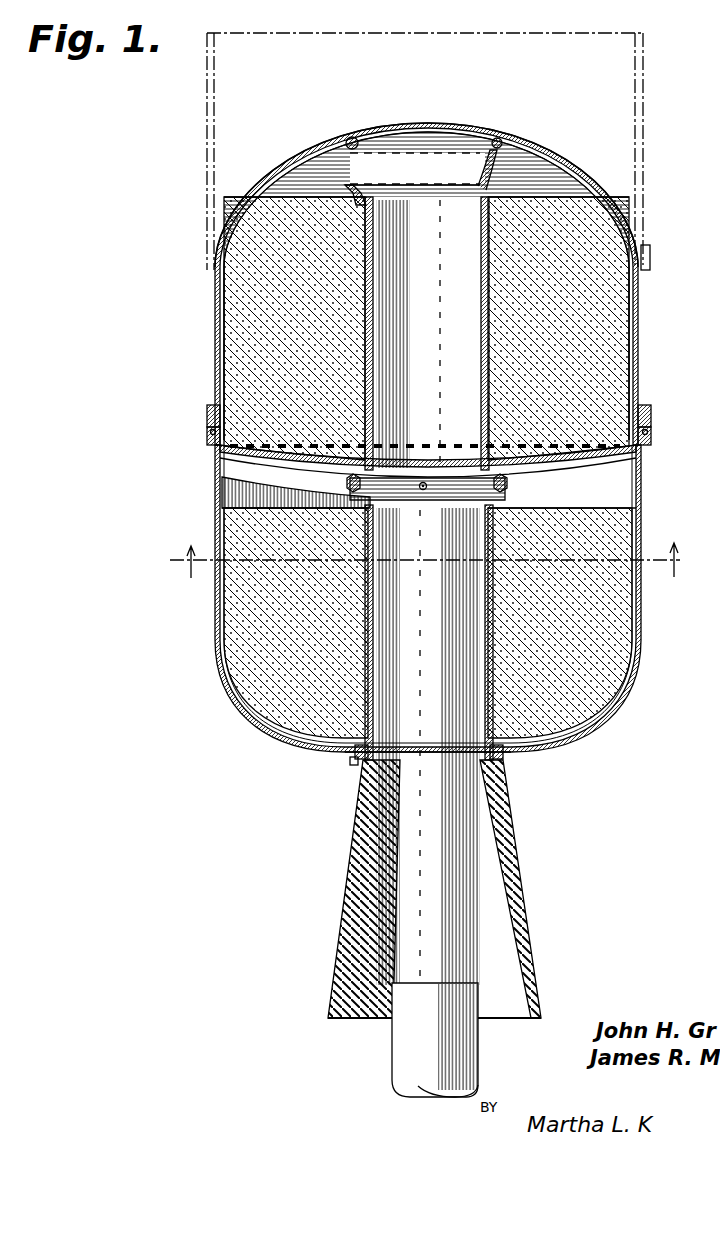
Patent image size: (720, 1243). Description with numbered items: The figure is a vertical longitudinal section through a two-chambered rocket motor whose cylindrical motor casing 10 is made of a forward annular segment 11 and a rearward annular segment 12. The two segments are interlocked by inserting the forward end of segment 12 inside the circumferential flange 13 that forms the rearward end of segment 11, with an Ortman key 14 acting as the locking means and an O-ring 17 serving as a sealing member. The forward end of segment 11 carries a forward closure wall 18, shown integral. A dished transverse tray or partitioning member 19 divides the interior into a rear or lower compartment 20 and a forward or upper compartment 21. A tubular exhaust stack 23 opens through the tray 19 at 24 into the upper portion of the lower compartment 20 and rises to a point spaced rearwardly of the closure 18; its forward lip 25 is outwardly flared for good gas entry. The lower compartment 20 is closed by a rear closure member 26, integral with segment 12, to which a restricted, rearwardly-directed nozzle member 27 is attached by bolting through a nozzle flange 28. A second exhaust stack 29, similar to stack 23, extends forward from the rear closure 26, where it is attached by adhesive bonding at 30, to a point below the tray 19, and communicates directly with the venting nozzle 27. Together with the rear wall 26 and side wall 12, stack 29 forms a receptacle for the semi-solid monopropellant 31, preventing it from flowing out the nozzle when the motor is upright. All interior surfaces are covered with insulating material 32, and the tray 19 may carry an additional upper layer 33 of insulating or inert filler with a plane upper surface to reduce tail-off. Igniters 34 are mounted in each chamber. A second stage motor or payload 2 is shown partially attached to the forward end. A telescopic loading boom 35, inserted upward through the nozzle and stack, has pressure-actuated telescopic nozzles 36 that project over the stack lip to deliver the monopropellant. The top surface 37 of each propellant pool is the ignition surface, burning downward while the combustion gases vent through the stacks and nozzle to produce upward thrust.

The second stage motor or payload 2 is at (646, 86).
The cylindrical motor casing 10 is at (200, 360).
The forward annular segment 11 is at (647, 257).
The rearward annular segment 12 is at (648, 538).
The circumferential flange 13 is at (210, 445).
The Ortman key 14 is at (209, 434).
The O-ring 17 is at (208, 418).
The forward closure wall 18 is at (534, 139).
The transverse tray or partitioning member 19 is at (260, 455).
The rear or lower compartment 20 is at (640, 492).
The forward or upper compartment 21 is at (578, 178).
The tubular exhaust stack 23 is at (352, 192).
The opening in tray 24 is at (476, 478).
The forward lip of stack 25 is at (494, 192).
The rear closure member or wall 26 is at (546, 750).
The nozzle member 27 is at (352, 802).
The nozzle flange 28 is at (352, 757).
The exhaust stack 29 is at (488, 548).
The adhesive bonding 30 is at (360, 745).
The semi-solid monopropellant 31 is at (604, 333).
The insulating material 32 is at (222, 335).
The additional upper layer 33 is at (515, 455).
The igniter 34 is at (437, 137).
The telescopic loading boom 35 is at (410, 1045).
The pressure-actuated telescopic nozzles 36 is at (380, 489).
The top surface of monopropellant pool 37 is at (549, 196).